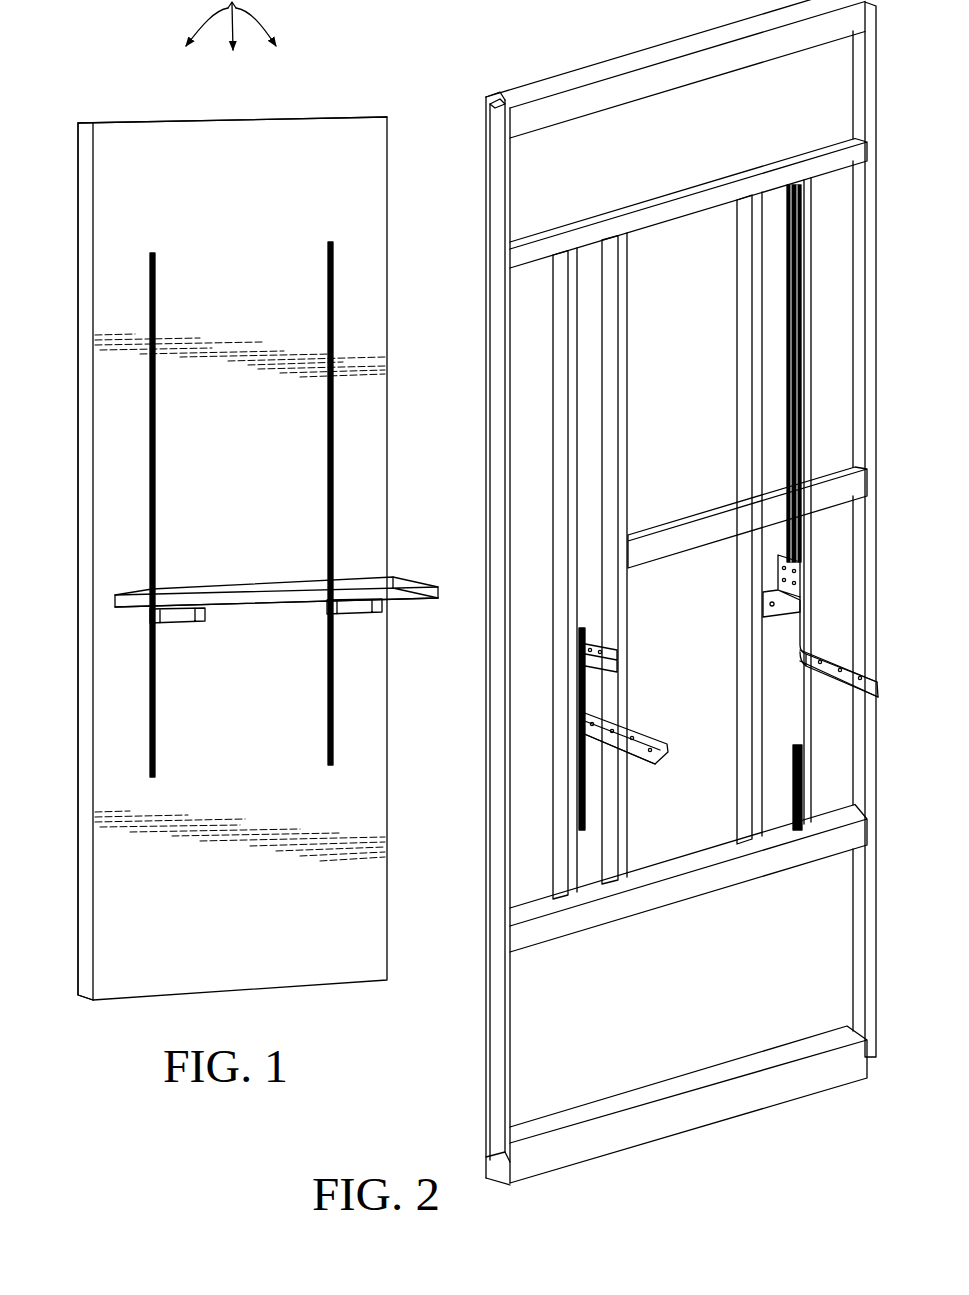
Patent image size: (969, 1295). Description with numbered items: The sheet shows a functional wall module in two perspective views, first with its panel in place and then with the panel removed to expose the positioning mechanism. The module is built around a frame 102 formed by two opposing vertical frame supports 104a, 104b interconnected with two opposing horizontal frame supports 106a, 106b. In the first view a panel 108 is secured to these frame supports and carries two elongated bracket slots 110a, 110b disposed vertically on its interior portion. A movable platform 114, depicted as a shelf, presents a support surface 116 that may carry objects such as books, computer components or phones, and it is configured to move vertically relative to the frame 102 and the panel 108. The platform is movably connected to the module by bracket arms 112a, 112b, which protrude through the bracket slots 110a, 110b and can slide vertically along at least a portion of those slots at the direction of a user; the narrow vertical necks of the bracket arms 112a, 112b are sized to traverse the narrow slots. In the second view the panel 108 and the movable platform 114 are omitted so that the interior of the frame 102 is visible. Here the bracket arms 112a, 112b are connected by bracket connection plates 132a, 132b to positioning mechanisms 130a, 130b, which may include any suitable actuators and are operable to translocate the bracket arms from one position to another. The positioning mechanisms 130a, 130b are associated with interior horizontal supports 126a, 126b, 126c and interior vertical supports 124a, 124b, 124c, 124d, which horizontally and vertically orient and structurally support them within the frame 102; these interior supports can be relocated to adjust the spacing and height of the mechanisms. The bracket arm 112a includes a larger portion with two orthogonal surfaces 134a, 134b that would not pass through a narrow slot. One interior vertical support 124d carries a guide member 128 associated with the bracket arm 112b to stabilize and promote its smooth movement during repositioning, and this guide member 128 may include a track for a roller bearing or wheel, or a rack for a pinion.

In FIG. 1, the frame 102 is at (77, 121).
In FIG. 2, the frame 102 is at (486, 96).
In FIG. 1, the vertical frame support 104a is at (84, 510).
In FIG. 2, the vertical frame support 104a is at (492, 415).
In FIG. 2, the vertical frame support 104b is at (872, 388).
In FIG. 1, the horizontal frame support 106a is at (138, 125).
In FIG. 2, the horizontal frame support 106a is at (706, 62).
In FIG. 2, the horizontal frame support 106b is at (715, 1105).
In FIG. 1, the panel 108 is at (277, 145).
In FIG. 1, the bracket slot 110a is at (156, 289).
In FIG. 1, the bracket slot 110b is at (326, 345).
In FIG. 1, the bracket arm 112a is at (196, 614).
In FIG. 2, the bracket arm 112a is at (670, 763).
In FIG. 1, the bracket arm 112b is at (372, 606).
In FIG. 2, the bracket arm 112b is at (863, 670).
In FIG. 1, the movable platform 114 is at (250, 610).
In FIG. 1, the support surface 116 is at (262, 588).
In FIG. 2, the interior vertical support 124a is at (562, 365).
In FIG. 2, the interior vertical support 124b is at (610, 446).
In FIG. 2, the interior vertical support 124c is at (752, 318).
In FIG. 2, the interior vertical support 124d is at (803, 400).
In FIG. 2, the interior horizontal support 126a is at (676, 212).
In FIG. 2, the interior horizontal support 126b is at (683, 532).
In FIG. 2, the interior horizontal support 126c is at (685, 885).
In FIG. 2, the guide member 128 is at (783, 478).
In FIG. 2, the positioning mechanism 130a is at (593, 882).
In FIG. 2, the positioning mechanism 130b is at (787, 828).
In FIG. 2, the bracket connection plate 132a is at (617, 648).
In FIG. 2, the bracket connection plate 132b is at (800, 540).
In FIG. 2, the orthogonal surface 134a is at (640, 738).
In FIG. 2, the orthogonal surface 134b is at (632, 748).